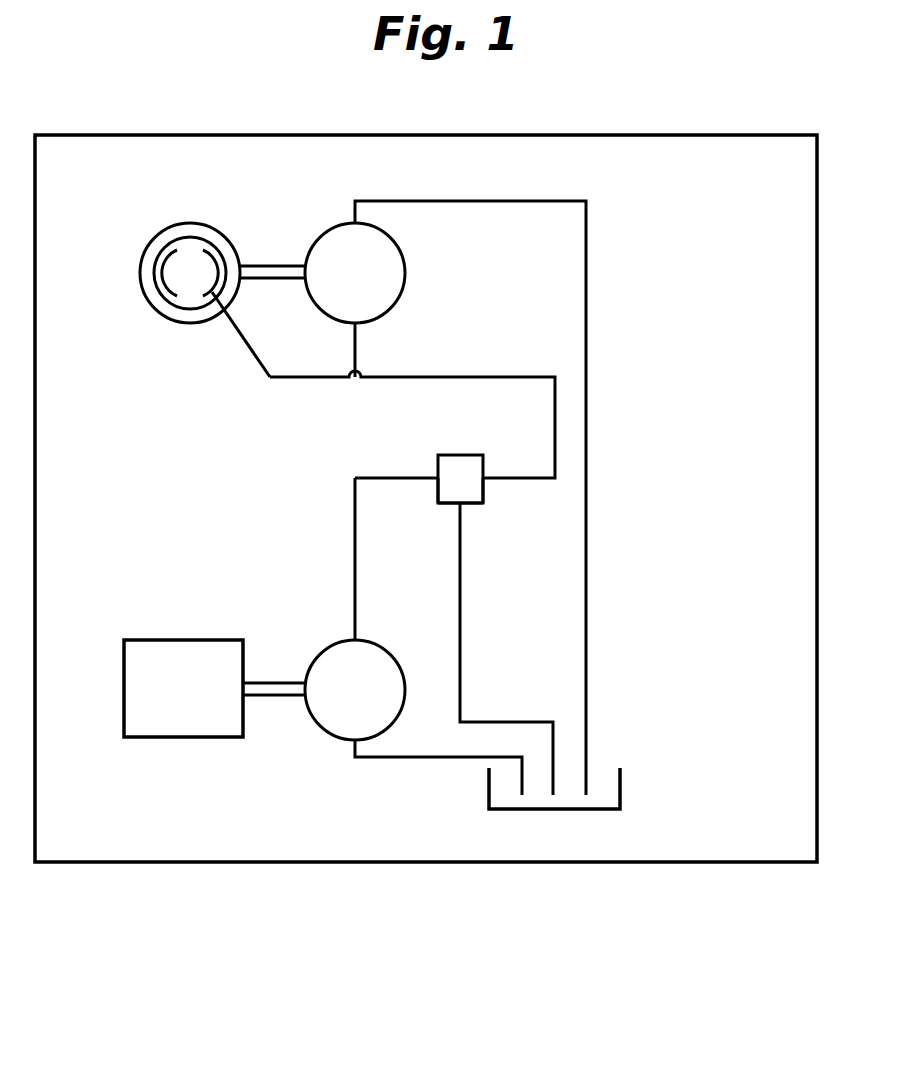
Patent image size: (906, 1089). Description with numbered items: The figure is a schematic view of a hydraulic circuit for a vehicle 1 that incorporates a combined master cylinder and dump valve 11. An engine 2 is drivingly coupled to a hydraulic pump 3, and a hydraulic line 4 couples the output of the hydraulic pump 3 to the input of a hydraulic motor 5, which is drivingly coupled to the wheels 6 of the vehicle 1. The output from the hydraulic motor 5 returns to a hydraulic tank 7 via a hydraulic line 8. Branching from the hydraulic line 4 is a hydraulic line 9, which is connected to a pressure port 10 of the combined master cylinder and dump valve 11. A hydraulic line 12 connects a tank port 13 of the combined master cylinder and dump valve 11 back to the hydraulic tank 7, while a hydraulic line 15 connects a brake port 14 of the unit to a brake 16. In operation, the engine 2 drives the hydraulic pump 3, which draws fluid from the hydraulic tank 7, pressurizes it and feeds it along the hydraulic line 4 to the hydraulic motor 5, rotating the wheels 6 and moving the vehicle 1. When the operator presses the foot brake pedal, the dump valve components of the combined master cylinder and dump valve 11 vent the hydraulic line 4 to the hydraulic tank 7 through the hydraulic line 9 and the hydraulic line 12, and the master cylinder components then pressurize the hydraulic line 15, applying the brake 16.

The vehicle 1 is at (382, 862).
The engine 2 is at (180, 738).
The hydraulic pump 3 is at (310, 716).
The hydraulic line 4 is at (355, 588).
The hydraulic motor 5 is at (312, 247).
The wheels 6 is at (150, 244).
The hydraulic tank 7 is at (620, 790).
The hydraulic line 8 is at (586, 228).
The hydraulic line 9 is at (400, 478).
The pressure port 10 is at (437, 481).
The combined master cylinder and dump valve 11 is at (462, 468).
The hydraulic line 12 is at (460, 627).
The tank port 13 is at (462, 506).
The brake port 14 is at (484, 481).
The hydraulic line 15 is at (555, 426).
The brake 16 is at (168, 298).